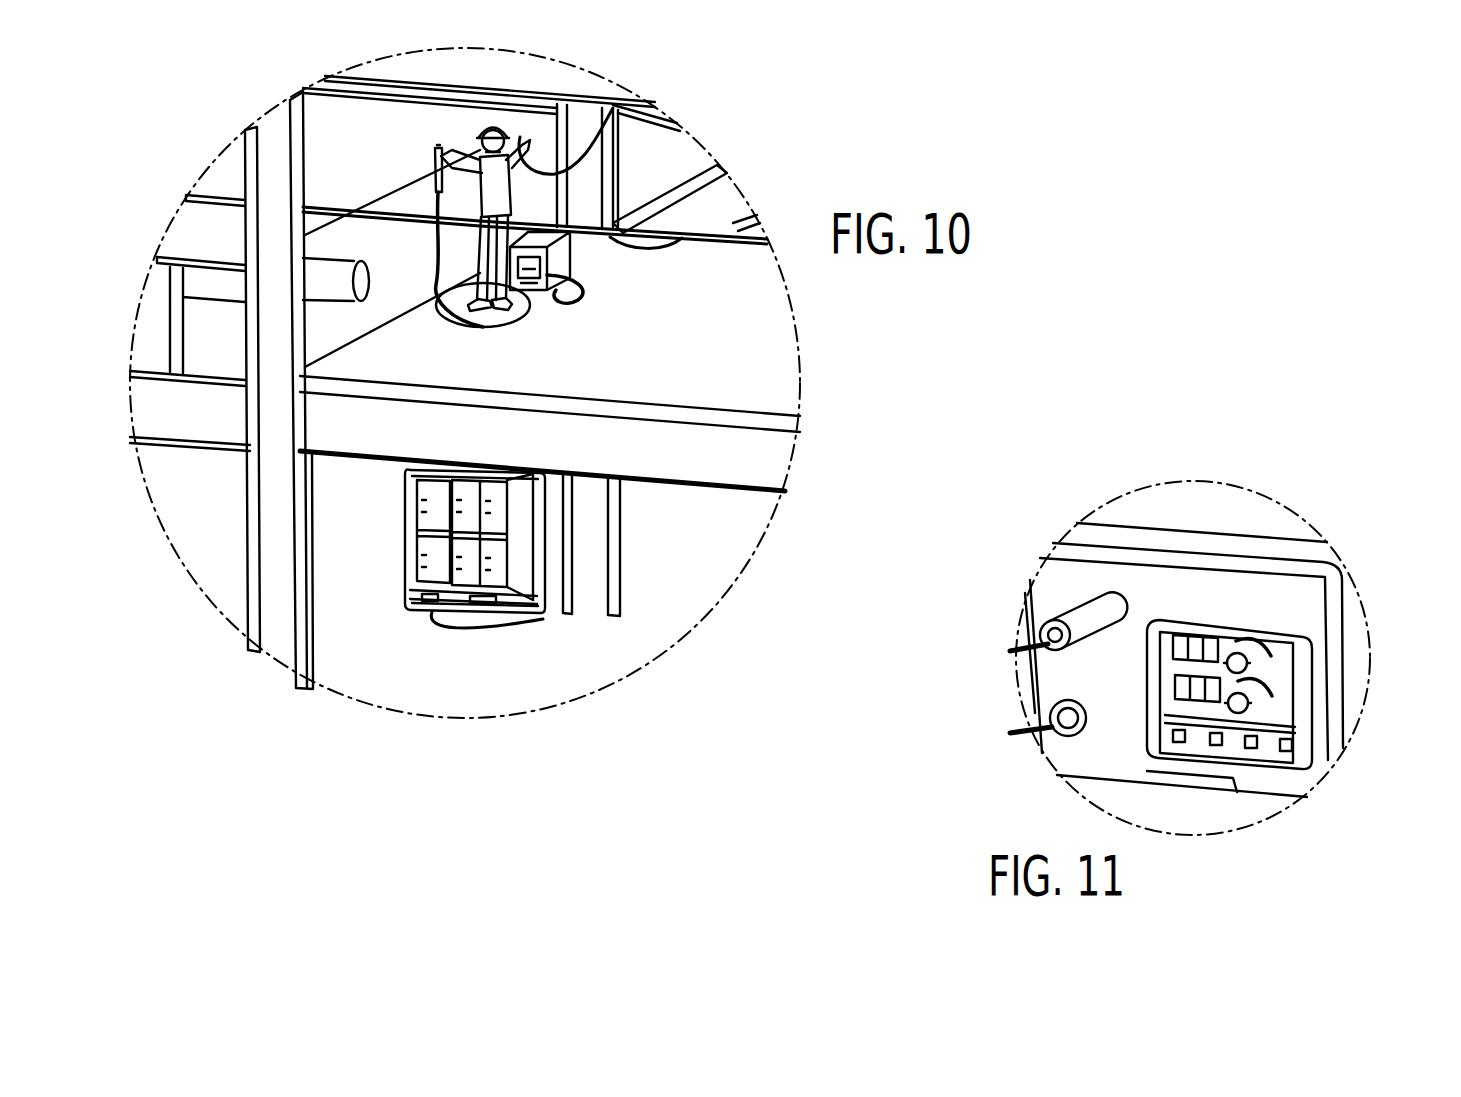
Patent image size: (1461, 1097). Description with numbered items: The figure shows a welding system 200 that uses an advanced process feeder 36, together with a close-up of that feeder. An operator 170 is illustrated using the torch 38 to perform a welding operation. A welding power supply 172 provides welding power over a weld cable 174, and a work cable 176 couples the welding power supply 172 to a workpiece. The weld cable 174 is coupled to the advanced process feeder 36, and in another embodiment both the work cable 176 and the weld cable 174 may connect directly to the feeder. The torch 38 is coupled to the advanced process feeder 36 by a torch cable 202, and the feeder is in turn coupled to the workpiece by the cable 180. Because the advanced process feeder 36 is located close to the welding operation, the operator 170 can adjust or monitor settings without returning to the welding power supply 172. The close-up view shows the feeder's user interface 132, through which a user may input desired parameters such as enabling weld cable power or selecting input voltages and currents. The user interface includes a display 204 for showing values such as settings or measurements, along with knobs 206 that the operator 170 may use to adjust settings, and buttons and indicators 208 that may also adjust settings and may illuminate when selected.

In FIG. 10, the welding system 200 is at (222, 41).
In FIG. 10, the torch 38 is at (440, 160).
In FIG. 10, the torch cable 202 is at (432, 274).
In FIG. 11, the torch cable 202 is at (1010, 651).
In FIG. 10, the operator 170 is at (520, 137).
In FIG. 10, the weld cable 174 is at (587, 232).
In FIG. 10, the work cable 176 is at (692, 230).
In FIG. 10, the cable 180 is at (563, 293).
In FIG. 11, the cable 180 is at (1012, 735).
In FIG. 10, the advanced process feeder 36 is at (555, 292).
In FIG. 11, the advanced process feeder 36 is at (1093, 451).
In FIG. 10, the welding power supply 172 is at (524, 604).
In FIG. 11, the display 204 is at (1172, 651).
In FIG. 11, the knobs 206 is at (1248, 703).
In FIG. 11, the user interface 132 is at (1307, 720).
In FIG. 11, the buttons and indicators 208 is at (1252, 746).